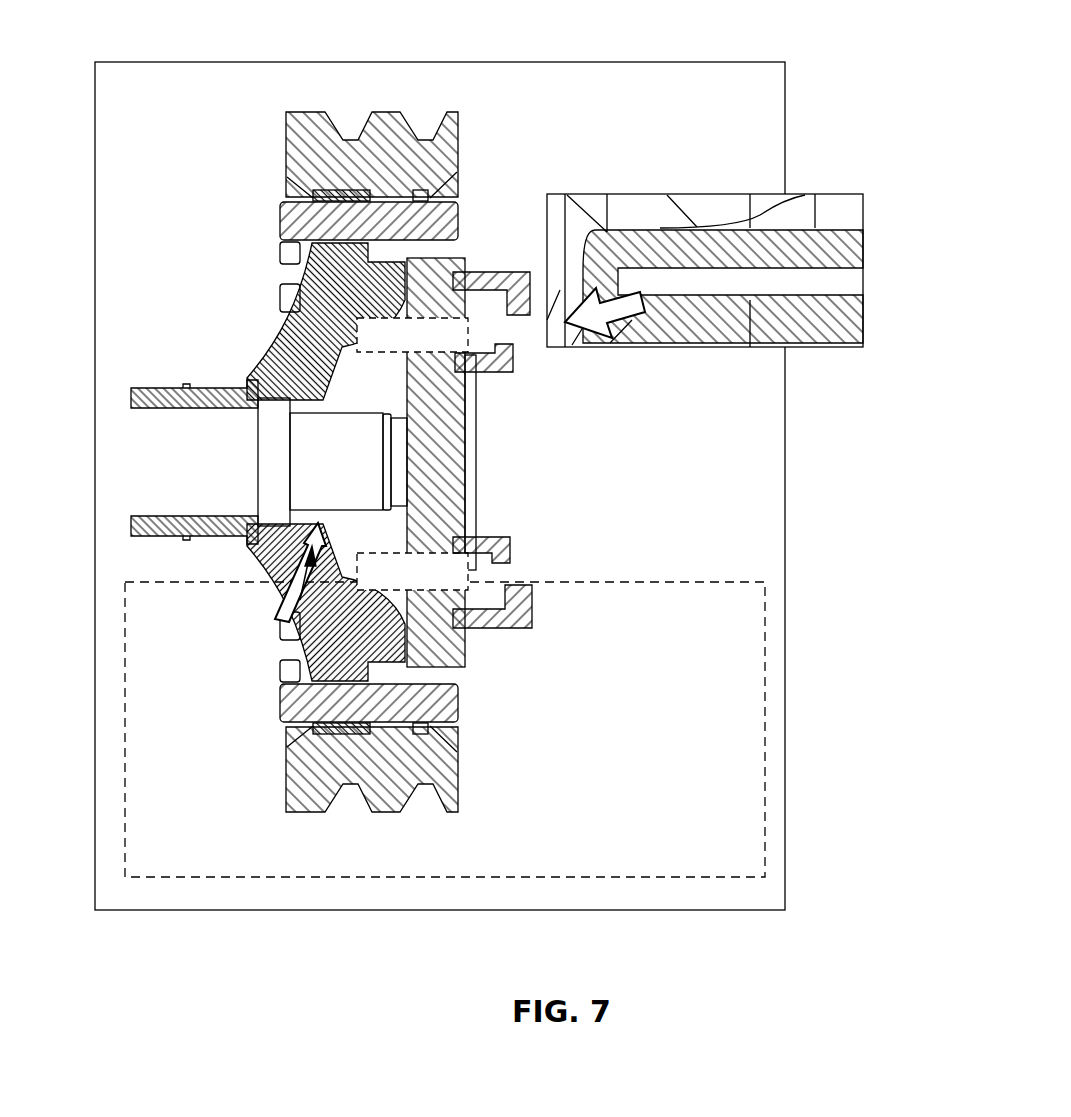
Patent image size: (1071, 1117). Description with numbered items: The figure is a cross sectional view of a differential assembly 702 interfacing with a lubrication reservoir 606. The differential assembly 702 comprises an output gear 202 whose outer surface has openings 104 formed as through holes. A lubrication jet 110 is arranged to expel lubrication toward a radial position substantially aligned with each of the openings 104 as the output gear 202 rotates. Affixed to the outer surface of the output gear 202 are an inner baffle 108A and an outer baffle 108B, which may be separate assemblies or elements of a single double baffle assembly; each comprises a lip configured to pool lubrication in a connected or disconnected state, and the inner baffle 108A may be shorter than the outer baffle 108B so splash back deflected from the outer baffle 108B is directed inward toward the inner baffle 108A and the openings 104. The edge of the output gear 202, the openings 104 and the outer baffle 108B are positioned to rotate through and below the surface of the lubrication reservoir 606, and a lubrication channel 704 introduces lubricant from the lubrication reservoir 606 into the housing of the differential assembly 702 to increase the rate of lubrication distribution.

The differential assembly 702 is at (766, 73).
The lubrication reservoir 606 is at (180, 582).
The openings 104 is at (300, 335).
The output gear 202 is at (420, 462).
The inner baffle 108A is at (510, 534).
The outer baffle 108B is at (506, 280).
The lubrication channel 704 is at (283, 603).
The lubrication jet 110 is at (845, 245).